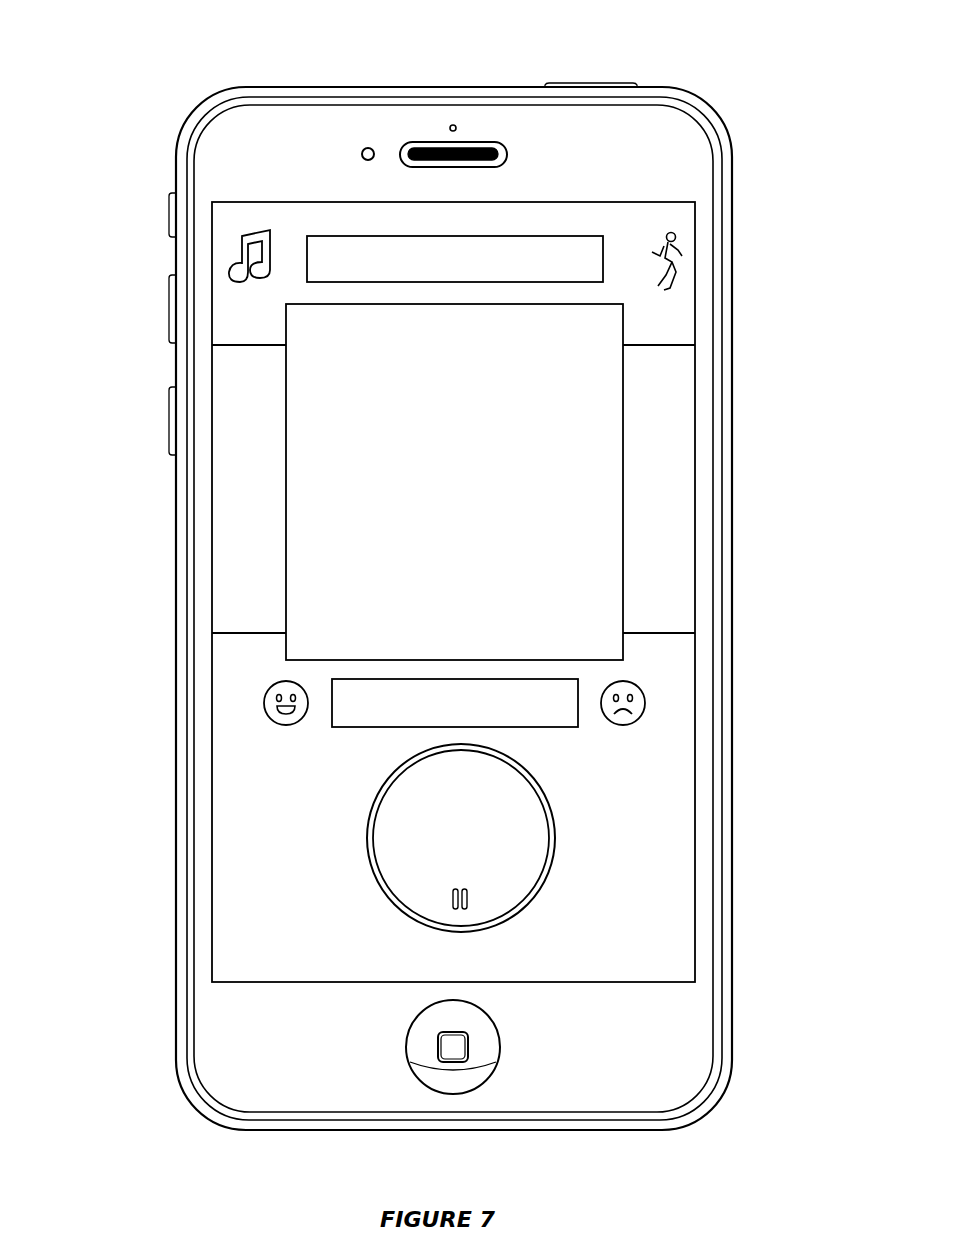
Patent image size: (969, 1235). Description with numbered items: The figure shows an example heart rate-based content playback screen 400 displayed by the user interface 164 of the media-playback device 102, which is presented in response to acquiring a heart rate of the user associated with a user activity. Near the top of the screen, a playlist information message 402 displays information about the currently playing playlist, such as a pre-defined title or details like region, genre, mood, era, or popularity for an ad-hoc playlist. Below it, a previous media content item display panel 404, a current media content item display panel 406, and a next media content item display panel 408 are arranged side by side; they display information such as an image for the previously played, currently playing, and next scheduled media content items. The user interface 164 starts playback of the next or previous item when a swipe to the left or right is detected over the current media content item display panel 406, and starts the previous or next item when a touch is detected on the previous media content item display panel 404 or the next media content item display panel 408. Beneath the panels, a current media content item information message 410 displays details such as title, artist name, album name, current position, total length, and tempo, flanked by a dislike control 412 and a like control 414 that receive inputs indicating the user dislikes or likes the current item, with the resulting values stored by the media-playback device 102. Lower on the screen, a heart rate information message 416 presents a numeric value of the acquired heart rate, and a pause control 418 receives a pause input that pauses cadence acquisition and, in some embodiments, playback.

The media-playback device 102 is at (128, 36).
The user interface 164 is at (174, 258).
The heart rate-based content playback screen 400 is at (605, 202).
The playlist information message 402 is at (373, 236).
The previous media content item display panel 404 is at (272, 513).
The current media content item display panel 406 is at (479, 513).
The next media content item display panel 408 is at (682, 513).
The current media content item information message 410 is at (508, 728).
The dislike control 412 is at (256, 703).
The like control 414 is at (652, 703).
The heart rate information message 416 is at (418, 848).
The pause control 418 is at (478, 898).